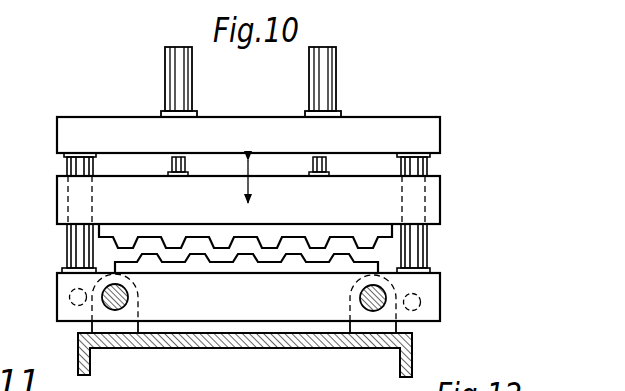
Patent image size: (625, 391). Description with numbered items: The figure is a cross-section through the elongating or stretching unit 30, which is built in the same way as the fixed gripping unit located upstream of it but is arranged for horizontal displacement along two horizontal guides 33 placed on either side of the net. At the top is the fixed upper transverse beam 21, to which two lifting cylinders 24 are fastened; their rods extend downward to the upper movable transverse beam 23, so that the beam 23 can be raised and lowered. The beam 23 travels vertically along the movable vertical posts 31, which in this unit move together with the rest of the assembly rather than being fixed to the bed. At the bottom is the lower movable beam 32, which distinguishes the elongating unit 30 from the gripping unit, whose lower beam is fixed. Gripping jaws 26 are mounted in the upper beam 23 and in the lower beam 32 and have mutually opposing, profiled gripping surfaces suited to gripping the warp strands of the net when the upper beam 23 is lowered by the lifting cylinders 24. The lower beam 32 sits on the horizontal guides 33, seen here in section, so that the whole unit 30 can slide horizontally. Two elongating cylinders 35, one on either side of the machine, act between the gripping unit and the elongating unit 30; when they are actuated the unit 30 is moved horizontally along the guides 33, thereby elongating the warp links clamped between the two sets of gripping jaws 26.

The elongating unit 30 is at (443, 108).
The fixed upper transverse beam 21 is at (247, 122).
The lifting cylinders 24 is at (166, 65).
The upper movable transverse beam 23 is at (441, 203).
The movable vertical posts 31 is at (67, 240).
The gripping jaws 26 is at (225, 242).
The lower movable beam 32 is at (441, 292).
The horizontal guides 33 is at (128, 296).
The elongating cylinders 35 is at (69, 297).